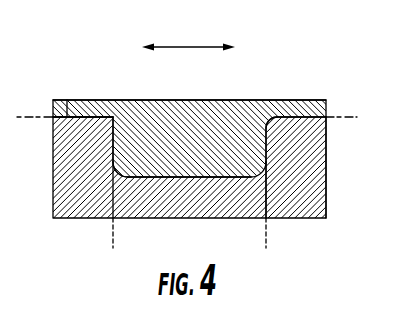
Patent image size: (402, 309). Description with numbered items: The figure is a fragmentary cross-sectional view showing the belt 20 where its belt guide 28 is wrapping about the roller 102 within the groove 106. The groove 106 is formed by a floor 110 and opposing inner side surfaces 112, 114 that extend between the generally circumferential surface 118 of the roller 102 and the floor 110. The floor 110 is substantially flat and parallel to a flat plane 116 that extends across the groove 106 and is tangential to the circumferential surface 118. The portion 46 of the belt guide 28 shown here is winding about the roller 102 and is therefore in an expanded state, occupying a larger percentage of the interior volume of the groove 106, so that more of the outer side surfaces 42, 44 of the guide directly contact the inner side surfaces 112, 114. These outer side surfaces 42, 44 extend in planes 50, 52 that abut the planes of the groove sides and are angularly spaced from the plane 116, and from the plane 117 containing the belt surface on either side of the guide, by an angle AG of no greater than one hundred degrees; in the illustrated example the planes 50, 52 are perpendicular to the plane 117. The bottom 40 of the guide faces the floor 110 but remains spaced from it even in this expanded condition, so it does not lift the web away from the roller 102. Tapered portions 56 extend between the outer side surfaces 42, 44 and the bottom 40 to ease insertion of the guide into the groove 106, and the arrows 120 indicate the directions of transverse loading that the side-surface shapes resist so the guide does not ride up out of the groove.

The belt 20 is at (288, 92).
The belt guide 28 is at (178, 126).
The bottom 40 is at (167, 178).
The outer side surface 42 is at (113, 160).
The outer side surface 44 is at (294, 153).
The portion of belt guide 46 is at (241, 92).
The plane 50 is at (114, 233).
The plane 52 is at (268, 230).
The tapered portions 56 is at (112, 162).
The roller 102 is at (327, 165).
The groove 106 is at (101, 163).
The floor 110 is at (213, 178).
The inner side surface 112 is at (112, 145).
The inner side surface 114 is at (280, 191).
The plane 116 is at (348, 117).
The plane 117 is at (348, 117).
The circumferential surface 118 is at (68, 100).
The arrows 120 is at (185, 47).
The angle AG is at (293, 190).